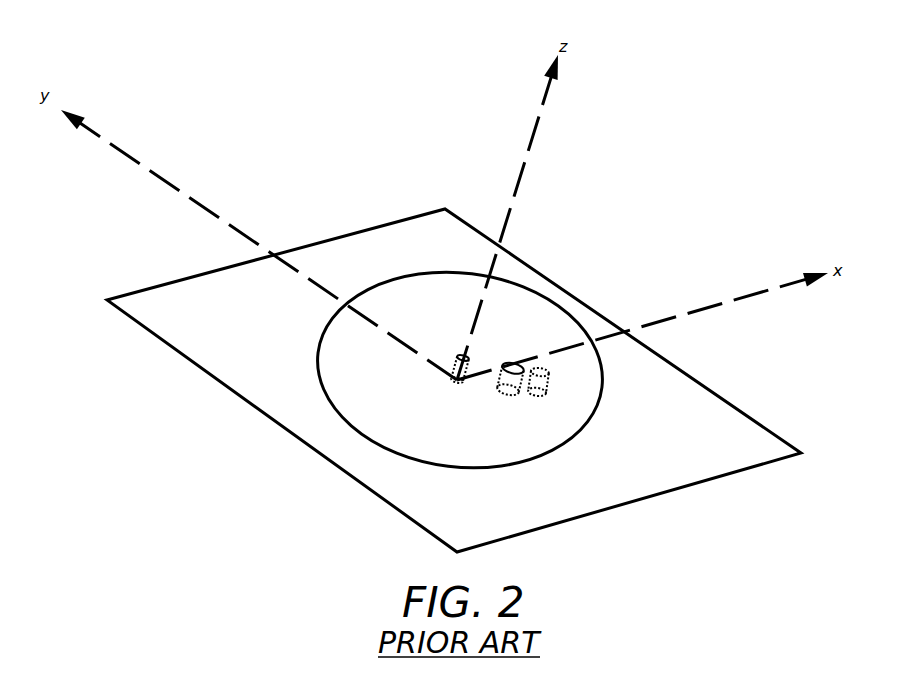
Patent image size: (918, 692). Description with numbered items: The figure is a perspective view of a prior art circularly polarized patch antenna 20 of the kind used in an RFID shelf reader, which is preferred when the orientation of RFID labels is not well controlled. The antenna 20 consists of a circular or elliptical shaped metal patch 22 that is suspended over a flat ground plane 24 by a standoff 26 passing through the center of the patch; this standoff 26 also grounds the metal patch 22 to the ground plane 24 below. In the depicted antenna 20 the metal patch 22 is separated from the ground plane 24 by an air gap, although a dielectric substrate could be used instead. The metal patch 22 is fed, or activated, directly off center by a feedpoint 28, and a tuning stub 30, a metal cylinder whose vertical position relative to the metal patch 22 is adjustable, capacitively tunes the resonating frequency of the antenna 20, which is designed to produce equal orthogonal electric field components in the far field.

The circularly polarized patch antenna 20 is at (766, 36).
The metal patch 22 is at (328, 380).
The ground plane 24 is at (335, 468).
The standoff 26 is at (461, 356).
The feedpoint 28 is at (506, 386).
The tuning stub 30 is at (552, 395).